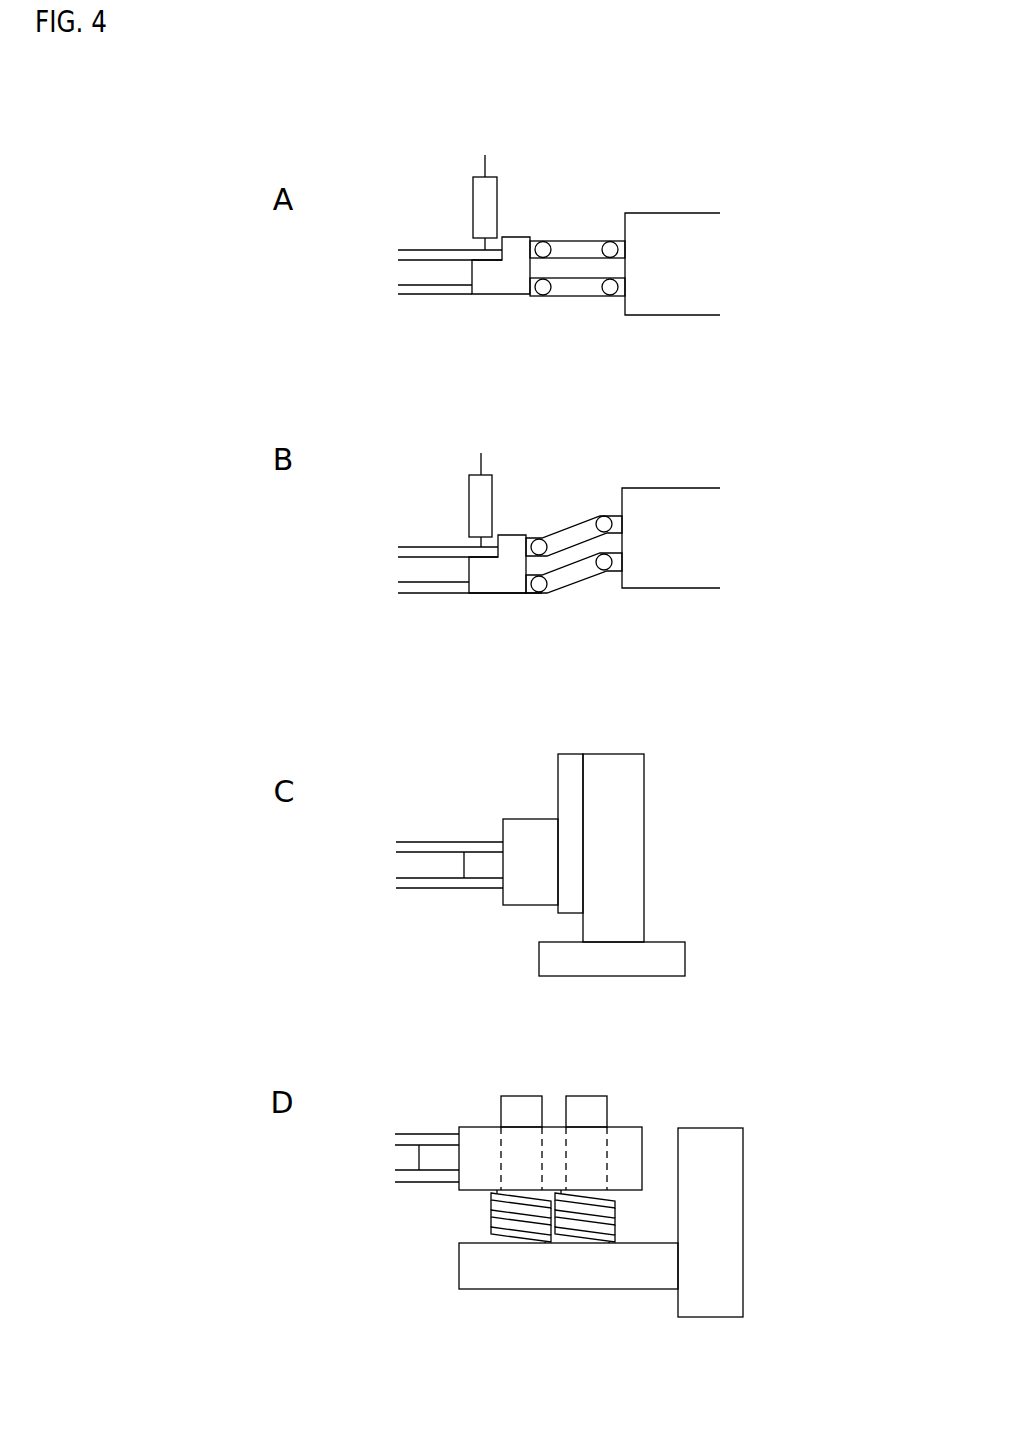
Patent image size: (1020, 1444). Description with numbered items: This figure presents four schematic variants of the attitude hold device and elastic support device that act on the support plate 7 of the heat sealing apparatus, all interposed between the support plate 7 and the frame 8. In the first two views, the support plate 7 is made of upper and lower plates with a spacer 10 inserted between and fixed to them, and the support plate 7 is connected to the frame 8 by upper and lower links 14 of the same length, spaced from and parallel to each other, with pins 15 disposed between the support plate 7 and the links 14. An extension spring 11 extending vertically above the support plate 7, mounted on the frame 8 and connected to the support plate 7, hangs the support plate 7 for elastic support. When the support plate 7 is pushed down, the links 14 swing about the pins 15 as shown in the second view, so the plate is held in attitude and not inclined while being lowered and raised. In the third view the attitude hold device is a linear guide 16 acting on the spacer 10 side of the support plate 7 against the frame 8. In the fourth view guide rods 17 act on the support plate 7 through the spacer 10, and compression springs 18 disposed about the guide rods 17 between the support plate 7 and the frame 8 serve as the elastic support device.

The support plate 7 is at (422, 246).
The frame 8 is at (667, 222).
The spacer 10 is at (498, 282).
The extension spring 11 is at (482, 205).
The links 14 is at (583, 239).
The pins 15 is at (545, 240).
The linear guide 16 is at (564, 790).
The guide rods 17 is at (588, 1108).
The compression springs 18 is at (492, 1213).